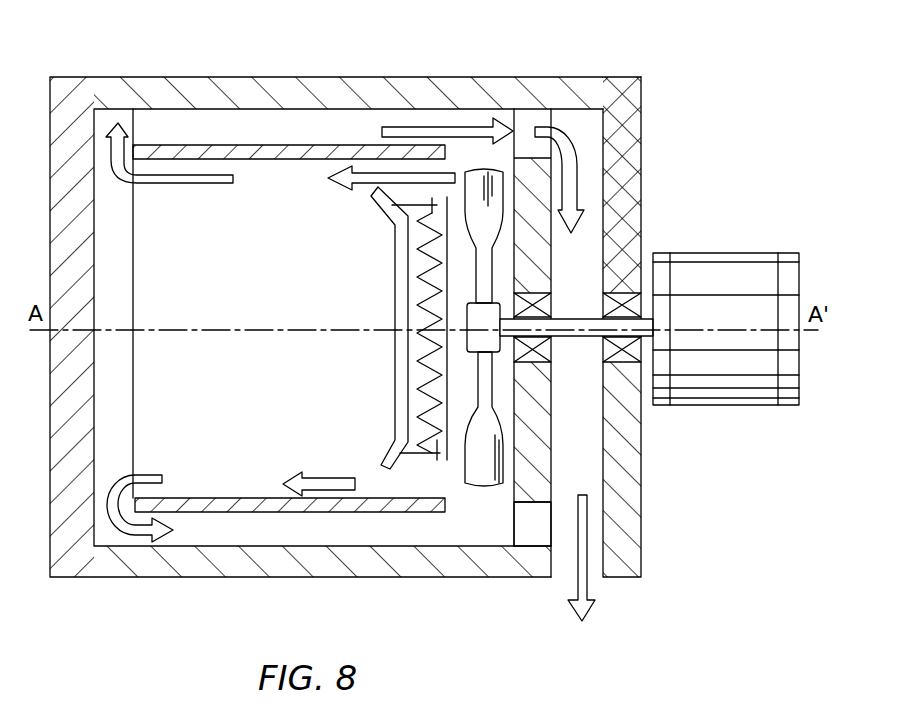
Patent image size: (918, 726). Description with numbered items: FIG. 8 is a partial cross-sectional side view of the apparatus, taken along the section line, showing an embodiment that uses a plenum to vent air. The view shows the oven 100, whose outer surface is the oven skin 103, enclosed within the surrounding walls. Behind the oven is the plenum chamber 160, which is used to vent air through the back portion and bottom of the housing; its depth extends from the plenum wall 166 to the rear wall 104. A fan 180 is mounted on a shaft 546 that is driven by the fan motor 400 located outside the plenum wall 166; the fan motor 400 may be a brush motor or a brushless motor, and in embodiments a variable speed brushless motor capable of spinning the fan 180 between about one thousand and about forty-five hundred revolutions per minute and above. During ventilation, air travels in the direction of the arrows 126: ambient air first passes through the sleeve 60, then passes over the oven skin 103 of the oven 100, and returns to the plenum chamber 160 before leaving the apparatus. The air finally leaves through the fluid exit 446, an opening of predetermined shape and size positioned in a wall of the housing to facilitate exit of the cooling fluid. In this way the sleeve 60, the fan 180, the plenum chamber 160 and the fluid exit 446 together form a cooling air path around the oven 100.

The oven 100 is at (395, 77).
The oven skin 103 is at (167, 106).
The rear wall 104 is at (535, 202).
The arrow 126 is at (203, 176).
The sleeve 60 is at (278, 147).
The plenum wall 166 is at (661, 327).
The plenum chamber 160 is at (600, 436).
The drive shaft 546 is at (540, 326).
The fan motor 400 is at (763, 388).
The fan 180 is at (493, 476).
The fluid exit 446 is at (522, 572).